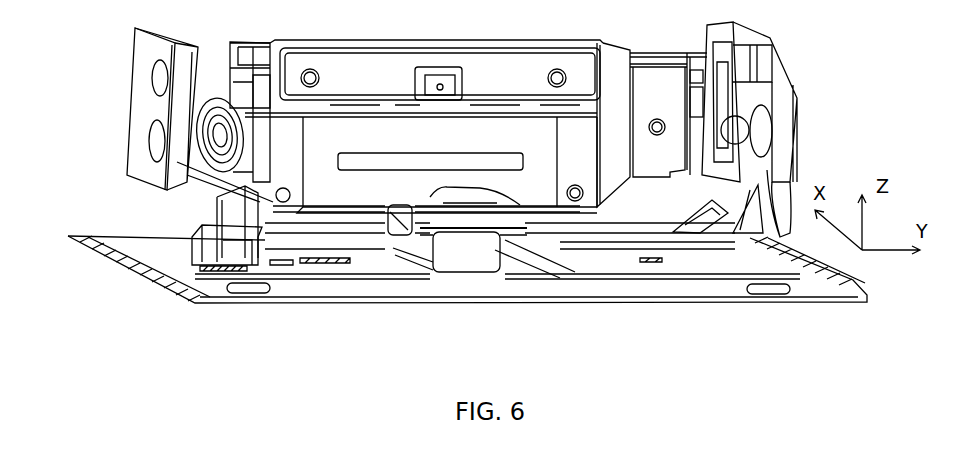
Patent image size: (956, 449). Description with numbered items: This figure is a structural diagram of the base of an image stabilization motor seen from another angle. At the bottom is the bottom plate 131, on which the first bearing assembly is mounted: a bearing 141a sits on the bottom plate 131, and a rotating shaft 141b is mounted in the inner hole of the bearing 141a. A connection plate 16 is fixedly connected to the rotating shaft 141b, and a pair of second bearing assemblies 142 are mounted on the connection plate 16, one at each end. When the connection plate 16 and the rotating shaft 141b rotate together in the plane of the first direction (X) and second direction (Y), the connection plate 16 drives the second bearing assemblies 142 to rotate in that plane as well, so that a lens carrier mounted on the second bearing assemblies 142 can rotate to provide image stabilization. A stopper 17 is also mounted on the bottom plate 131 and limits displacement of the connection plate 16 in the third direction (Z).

The second bearing assembly 142 is at (203, 135).
The rotating shaft 141b is at (417, 210).
The stopper 17 is at (483, 200).
The connection plate 16 is at (645, 230).
The bearing 141a is at (463, 258).
The bottom plate 131 is at (620, 287).